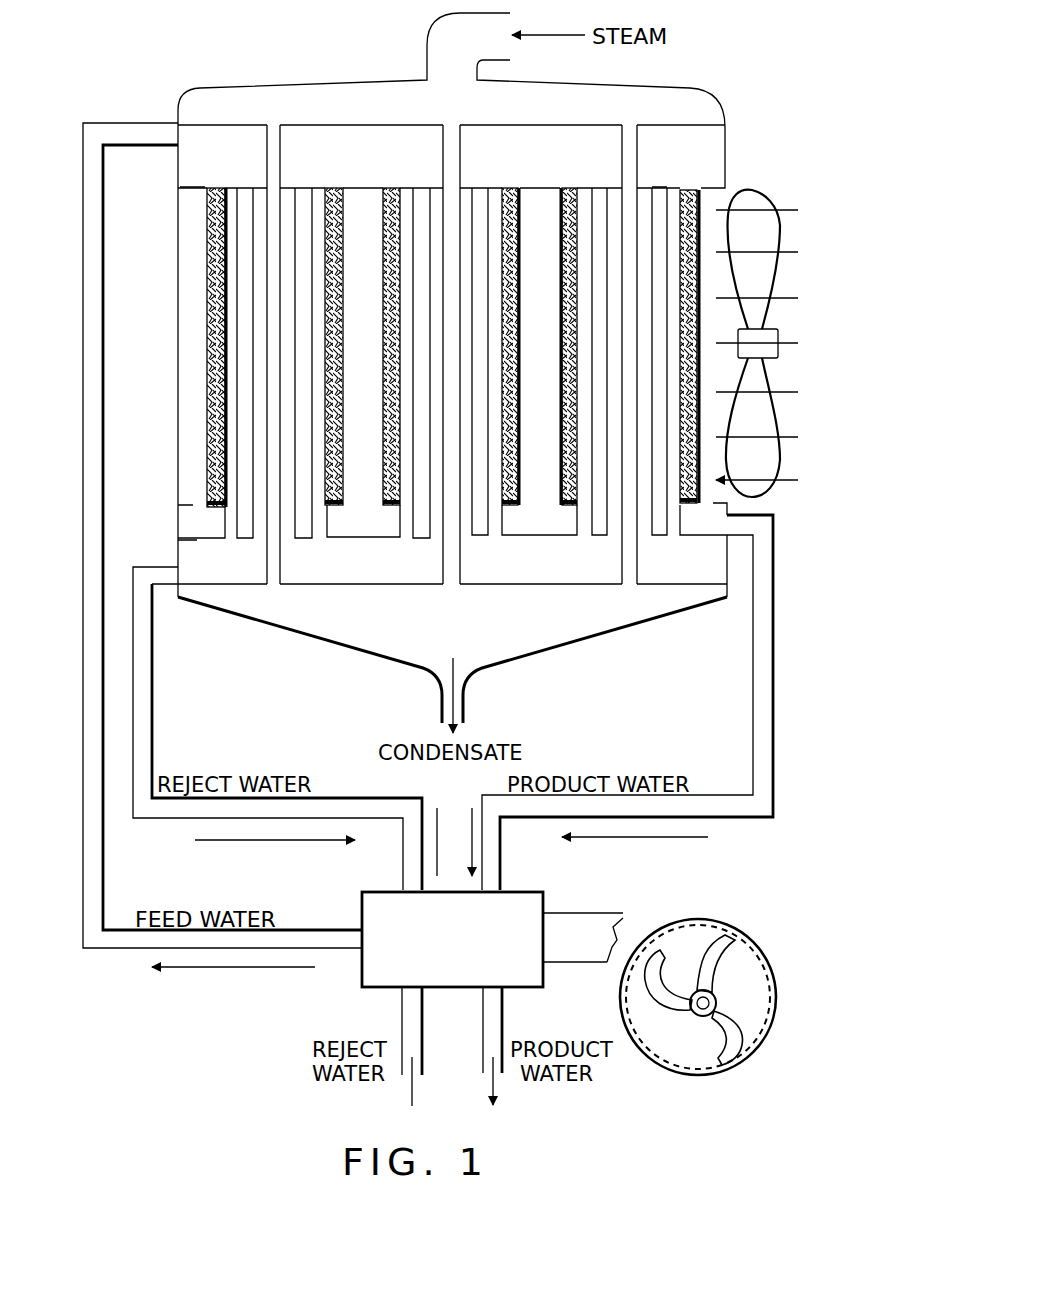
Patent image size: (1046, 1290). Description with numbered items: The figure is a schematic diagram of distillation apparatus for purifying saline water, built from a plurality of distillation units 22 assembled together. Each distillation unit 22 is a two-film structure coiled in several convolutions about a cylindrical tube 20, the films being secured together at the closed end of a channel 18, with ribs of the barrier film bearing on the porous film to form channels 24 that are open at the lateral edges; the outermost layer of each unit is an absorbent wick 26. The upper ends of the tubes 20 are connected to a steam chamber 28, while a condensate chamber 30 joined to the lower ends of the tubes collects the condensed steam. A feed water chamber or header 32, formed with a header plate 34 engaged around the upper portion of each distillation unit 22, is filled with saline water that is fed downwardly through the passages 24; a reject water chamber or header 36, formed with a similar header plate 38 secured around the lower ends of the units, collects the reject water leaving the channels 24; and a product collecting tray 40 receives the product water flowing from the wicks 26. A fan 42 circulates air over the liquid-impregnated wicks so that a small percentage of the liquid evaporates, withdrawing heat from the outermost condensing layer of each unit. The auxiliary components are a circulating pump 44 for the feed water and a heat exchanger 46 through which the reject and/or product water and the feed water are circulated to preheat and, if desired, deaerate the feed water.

The channel 18 is at (245, 388).
The cylindrical tube 20 is at (440, 143).
The distillation unit 22 is at (524, 229).
The channel 24 is at (262, 451).
The wick 26 is at (700, 237).
The steam chamber 28 is at (360, 97).
The condensate chamber 30 is at (377, 635).
The feed water chamber 32 is at (732, 127).
The header plate 34 is at (353, 185).
The reject water chamber 36 is at (353, 565).
The header plate 38 is at (197, 542).
The product collecting tray 40 is at (193, 518).
The fan 42 is at (767, 277).
The circulating pump 44 is at (762, 948).
The heat exchanger 46 is at (518, 896).